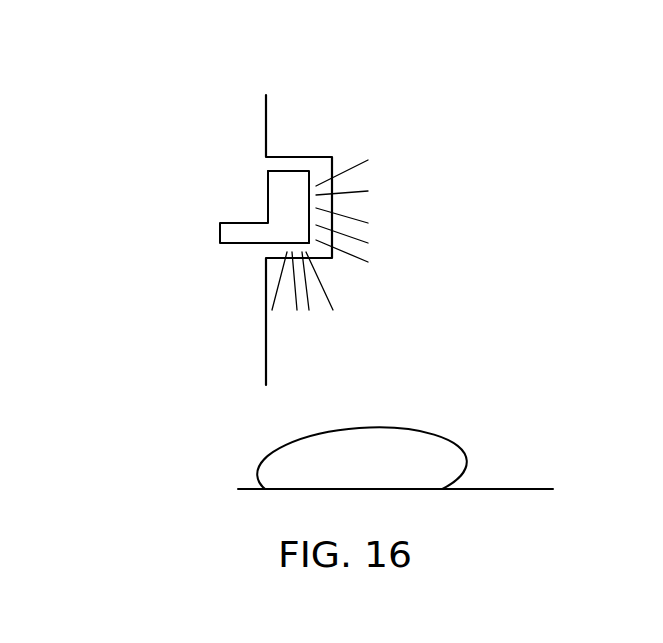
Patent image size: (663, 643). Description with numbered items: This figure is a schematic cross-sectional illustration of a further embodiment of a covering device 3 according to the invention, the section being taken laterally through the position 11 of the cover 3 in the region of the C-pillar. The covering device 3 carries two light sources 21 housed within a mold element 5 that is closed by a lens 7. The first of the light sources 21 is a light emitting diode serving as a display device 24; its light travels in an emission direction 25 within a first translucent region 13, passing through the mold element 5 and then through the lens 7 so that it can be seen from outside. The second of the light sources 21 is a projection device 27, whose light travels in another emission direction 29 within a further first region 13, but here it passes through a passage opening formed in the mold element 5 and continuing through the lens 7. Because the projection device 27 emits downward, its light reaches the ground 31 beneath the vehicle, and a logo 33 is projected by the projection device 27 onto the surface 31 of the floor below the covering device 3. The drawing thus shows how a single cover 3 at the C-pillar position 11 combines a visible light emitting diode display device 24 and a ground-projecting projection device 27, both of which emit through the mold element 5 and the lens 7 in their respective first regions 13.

The covering device 3 is at (189, 58).
The mold element 5 is at (297, 156).
The lens 7 is at (299, 240).
The position 11 is at (390, 61).
The first translucent region 13 is at (338, 276).
The light sources 21 is at (214, 243).
The display device 24 is at (279, 206).
The emission direction 25 is at (384, 205).
The projection device 27 is at (272, 233).
The emission direction 29 is at (293, 298).
The ground 31 is at (530, 489).
The logo 33 is at (435, 450).